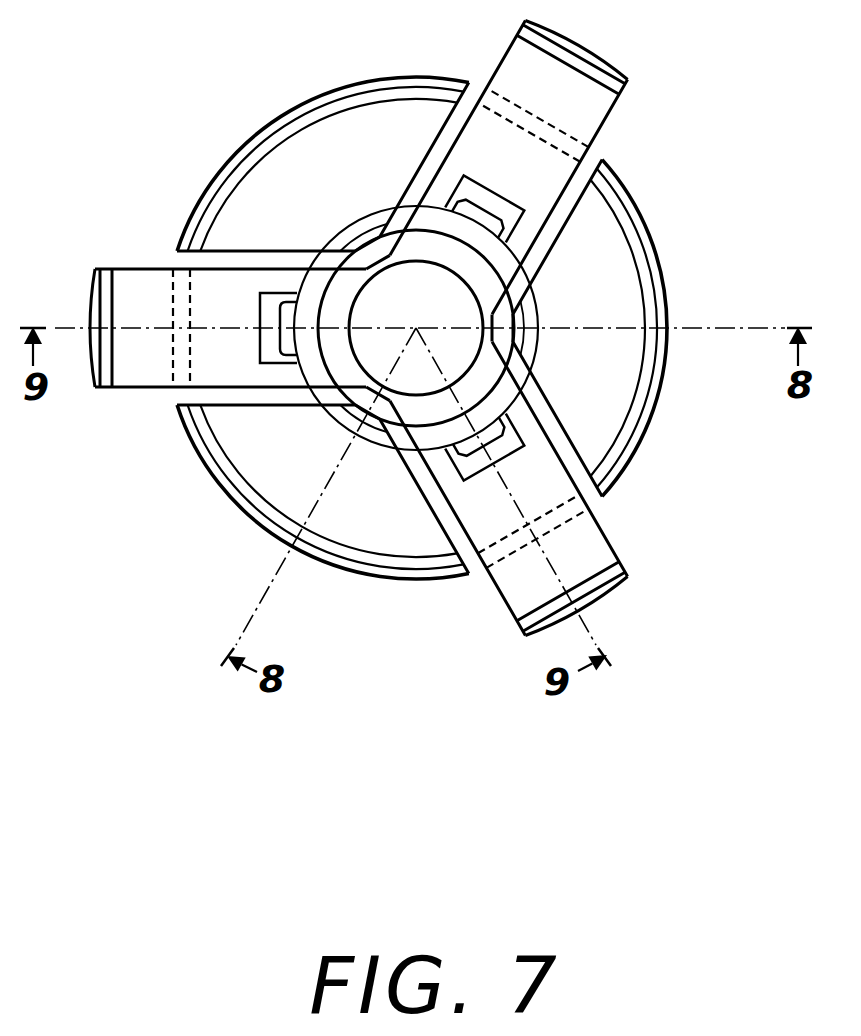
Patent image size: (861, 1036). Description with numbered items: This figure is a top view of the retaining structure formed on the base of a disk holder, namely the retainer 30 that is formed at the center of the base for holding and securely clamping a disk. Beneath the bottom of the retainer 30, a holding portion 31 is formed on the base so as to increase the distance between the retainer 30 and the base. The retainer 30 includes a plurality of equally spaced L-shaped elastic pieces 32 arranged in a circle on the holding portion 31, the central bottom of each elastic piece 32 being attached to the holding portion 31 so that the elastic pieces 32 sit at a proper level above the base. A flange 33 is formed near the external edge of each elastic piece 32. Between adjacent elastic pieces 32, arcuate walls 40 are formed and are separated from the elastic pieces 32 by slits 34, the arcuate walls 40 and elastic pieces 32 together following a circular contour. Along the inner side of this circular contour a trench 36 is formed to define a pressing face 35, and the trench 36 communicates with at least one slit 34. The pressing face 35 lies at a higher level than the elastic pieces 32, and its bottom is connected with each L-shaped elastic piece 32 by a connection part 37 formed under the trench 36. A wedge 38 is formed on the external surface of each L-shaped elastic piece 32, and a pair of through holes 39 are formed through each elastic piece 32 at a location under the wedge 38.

The retainer 30 is at (212, 134).
The holding portion 31 is at (180, 362).
The L-shaped elastic piece 32 is at (528, 560).
The flange 33 is at (593, 585).
The slit 34 is at (426, 500).
The pressing face 35 is at (437, 313).
The trench 36 is at (432, 230).
The connection part 37 is at (330, 312).
The wedge 38 is at (495, 433).
The through holes 39 is at (500, 448).
The arcuate wall 40 is at (545, 318).